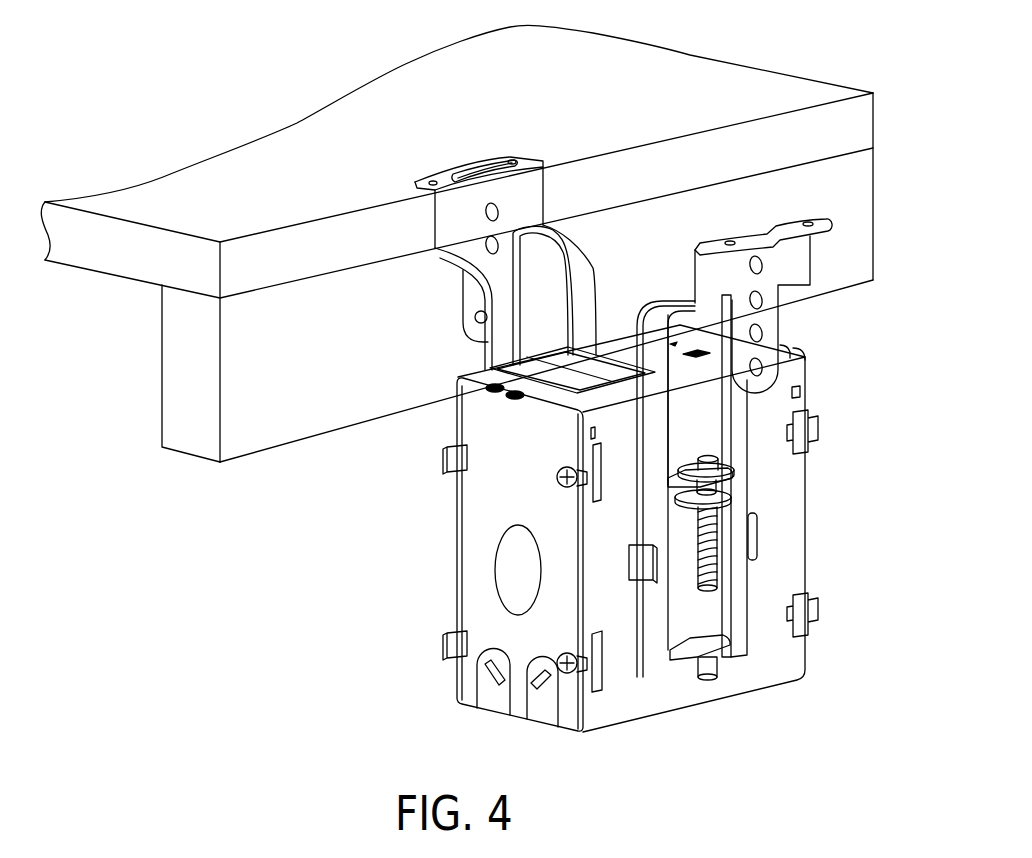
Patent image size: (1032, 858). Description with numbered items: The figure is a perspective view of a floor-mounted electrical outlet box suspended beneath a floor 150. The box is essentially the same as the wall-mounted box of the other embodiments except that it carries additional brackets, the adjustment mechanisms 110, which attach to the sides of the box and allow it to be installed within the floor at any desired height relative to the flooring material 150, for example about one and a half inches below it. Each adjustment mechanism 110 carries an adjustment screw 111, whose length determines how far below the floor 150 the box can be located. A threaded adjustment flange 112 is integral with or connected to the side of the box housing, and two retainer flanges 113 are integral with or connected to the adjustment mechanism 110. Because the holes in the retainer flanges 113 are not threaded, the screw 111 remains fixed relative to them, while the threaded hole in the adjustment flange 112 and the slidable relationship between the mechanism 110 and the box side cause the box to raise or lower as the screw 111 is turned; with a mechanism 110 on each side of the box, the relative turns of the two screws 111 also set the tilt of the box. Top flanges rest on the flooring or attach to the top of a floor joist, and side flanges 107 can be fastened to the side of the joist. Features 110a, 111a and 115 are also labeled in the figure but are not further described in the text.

The flooring material 150 is at (858, 128).
The side flange 107 is at (480, 300).
The adjustment mechanism 110 is at (737, 620).
The box mounting arm 110a is at (545, 313).
The adjustment screw 111 is at (748, 575).
The clip 111a is at (773, 440).
The threaded adjustment flange 112 is at (730, 497).
The retainer flange 113 is at (720, 465).
The mounting plate 115 is at (700, 422).